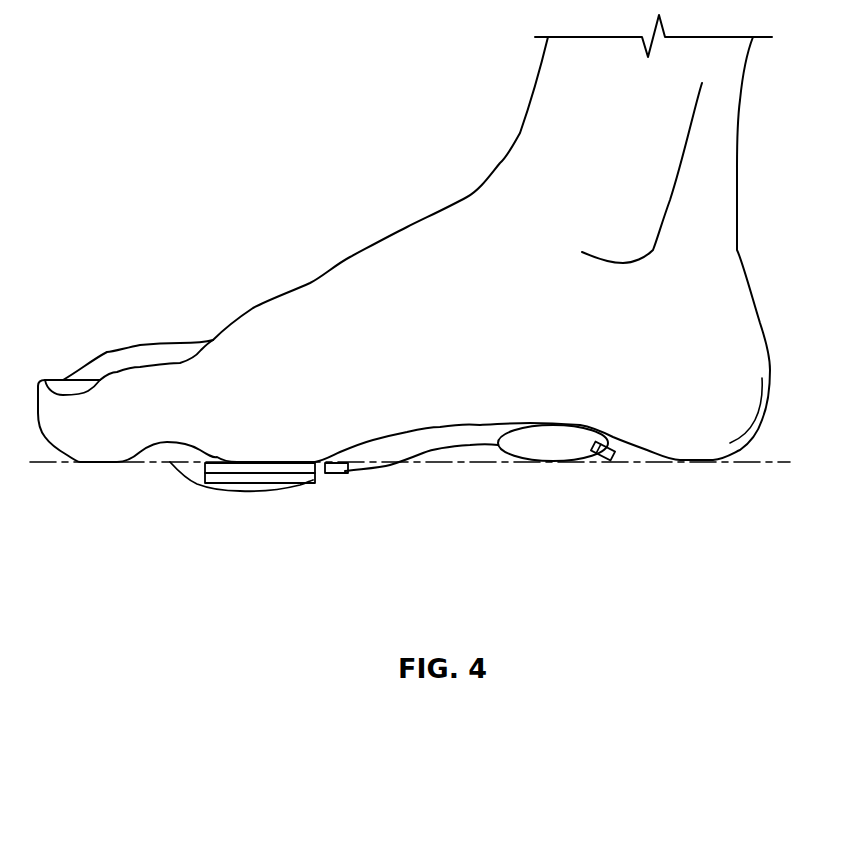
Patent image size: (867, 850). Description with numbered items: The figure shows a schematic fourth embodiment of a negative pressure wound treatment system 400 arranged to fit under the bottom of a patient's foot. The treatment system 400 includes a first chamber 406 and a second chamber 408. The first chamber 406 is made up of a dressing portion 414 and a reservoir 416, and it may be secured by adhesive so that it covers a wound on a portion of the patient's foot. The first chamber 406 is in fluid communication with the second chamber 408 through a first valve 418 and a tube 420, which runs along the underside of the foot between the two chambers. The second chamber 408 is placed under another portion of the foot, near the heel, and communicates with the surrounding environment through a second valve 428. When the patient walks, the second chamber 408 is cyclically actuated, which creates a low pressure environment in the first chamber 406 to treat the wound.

The negative pressure wound treatment system 400 is at (433, 545).
The first chamber 406 is at (192, 481).
The second chamber 408 is at (562, 461).
The dressing portion 414 is at (240, 467).
The reservoir 416 is at (268, 478).
The first valve 418 is at (338, 475).
The tube 420 is at (462, 450).
The second valve 428 is at (613, 456).